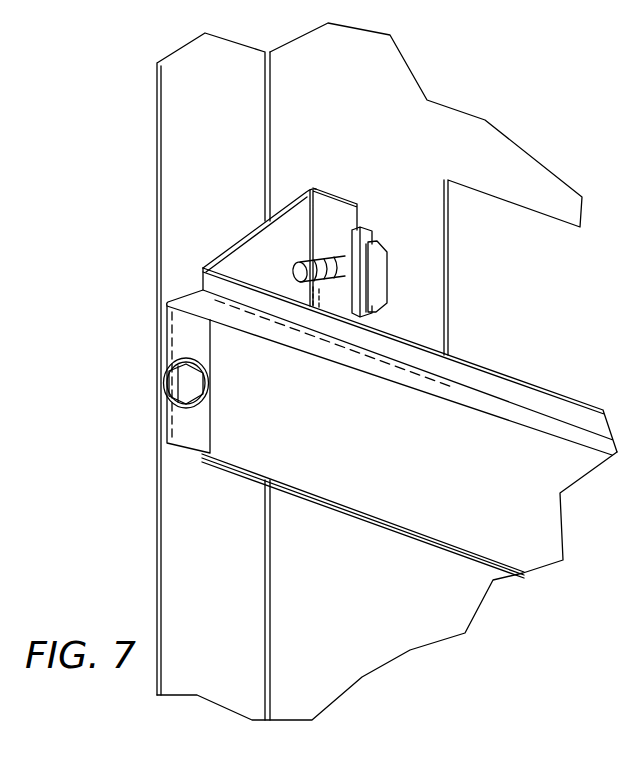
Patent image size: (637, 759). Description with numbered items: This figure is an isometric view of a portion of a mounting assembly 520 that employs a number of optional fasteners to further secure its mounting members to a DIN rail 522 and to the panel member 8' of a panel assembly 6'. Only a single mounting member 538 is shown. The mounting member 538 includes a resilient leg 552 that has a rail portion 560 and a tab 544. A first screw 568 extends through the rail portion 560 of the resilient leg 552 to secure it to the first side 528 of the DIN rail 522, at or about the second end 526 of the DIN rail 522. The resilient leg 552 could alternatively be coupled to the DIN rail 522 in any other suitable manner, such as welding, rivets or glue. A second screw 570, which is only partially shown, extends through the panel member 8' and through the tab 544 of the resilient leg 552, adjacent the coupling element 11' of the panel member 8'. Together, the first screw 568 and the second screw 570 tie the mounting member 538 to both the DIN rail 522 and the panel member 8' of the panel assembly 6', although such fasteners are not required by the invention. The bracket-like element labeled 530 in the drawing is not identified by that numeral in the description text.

The panel assembly 6' is at (404, 51).
The panel member 8' is at (426, 189).
The coupling element 11' is at (382, 248).
The mounting member 538 is at (178, 191).
The resilient leg 552 is at (263, 222).
The second screw 570 is at (325, 257).
The bracket 530 is at (237, 282).
The tab 544 is at (388, 278).
The rail portion 560 is at (183, 322).
The first screw 568 is at (164, 386).
The DIN rail 522 is at (361, 459).
The second end 526 is at (177, 447).
The first side 528 is at (247, 474).
The mounting assembly 520 is at (409, 587).